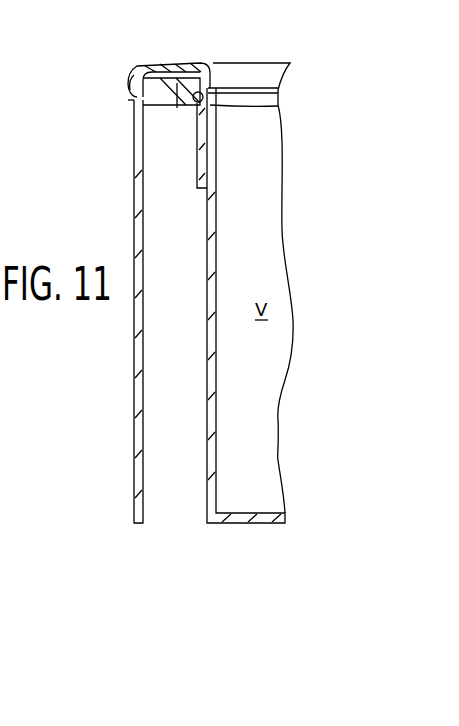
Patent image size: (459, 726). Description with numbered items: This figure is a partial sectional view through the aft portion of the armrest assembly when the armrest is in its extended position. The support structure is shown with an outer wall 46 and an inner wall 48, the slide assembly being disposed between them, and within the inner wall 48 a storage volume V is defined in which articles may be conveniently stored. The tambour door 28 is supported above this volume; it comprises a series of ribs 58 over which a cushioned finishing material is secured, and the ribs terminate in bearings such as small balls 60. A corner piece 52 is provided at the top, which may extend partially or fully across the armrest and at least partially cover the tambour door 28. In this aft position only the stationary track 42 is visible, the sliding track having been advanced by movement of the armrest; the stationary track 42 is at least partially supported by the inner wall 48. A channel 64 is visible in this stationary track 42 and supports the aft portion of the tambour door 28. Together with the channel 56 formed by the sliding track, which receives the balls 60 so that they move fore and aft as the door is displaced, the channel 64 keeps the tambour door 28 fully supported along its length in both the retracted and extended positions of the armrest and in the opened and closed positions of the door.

The tambour door 28 is at (244, 77).
The stationary track 42 is at (213, 135).
The outer wall 46 is at (132, 505).
The inner wall 48 is at (207, 480).
The corner piece 52 is at (135, 77).
The channel 56 is at (168, 77).
The ribs 58 is at (258, 108).
The balls 60 is at (191, 72).
The channel 64 is at (177, 107).